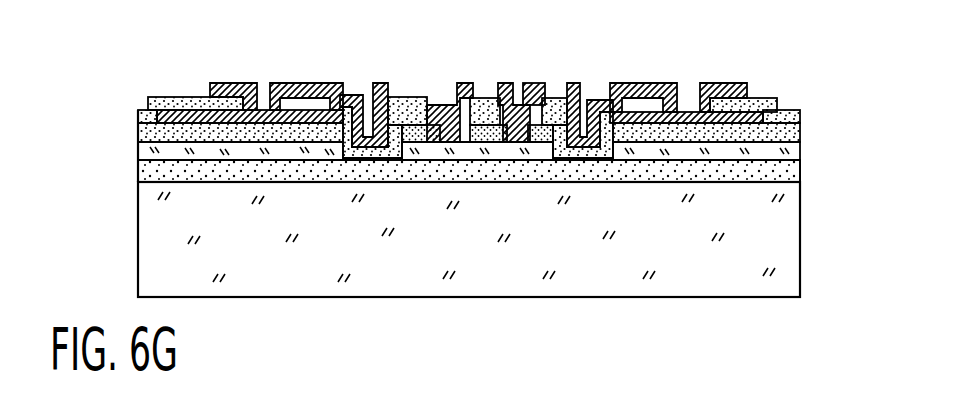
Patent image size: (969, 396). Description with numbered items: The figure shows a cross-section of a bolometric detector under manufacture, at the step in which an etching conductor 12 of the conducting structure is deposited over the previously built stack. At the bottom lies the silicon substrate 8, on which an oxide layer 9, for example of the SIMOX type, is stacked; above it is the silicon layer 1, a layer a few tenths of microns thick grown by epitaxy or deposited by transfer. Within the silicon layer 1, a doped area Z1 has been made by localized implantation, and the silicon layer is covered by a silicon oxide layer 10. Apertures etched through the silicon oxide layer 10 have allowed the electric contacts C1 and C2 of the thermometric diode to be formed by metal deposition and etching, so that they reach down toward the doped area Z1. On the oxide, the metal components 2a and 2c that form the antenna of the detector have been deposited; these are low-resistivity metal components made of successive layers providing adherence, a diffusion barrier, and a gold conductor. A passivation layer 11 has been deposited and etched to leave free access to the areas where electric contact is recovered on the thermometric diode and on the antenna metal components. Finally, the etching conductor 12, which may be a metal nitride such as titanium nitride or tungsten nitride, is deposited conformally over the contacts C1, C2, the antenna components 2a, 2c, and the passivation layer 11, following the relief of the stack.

The silicon layer 1 is at (138, 152).
The metal component 2a is at (183, 97).
The metal component 2c is at (750, 98).
The silicon substrate 8 is at (788, 243).
The oxide layer 9 is at (788, 170).
The silicon oxide layer 10 is at (138, 129).
The passivation layer 11 is at (790, 110).
The etching conductor 12 is at (283, 83).
The electric contact C1 is at (442, 100).
The electric contact C2 is at (517, 100).
The doped area Z1 is at (462, 148).